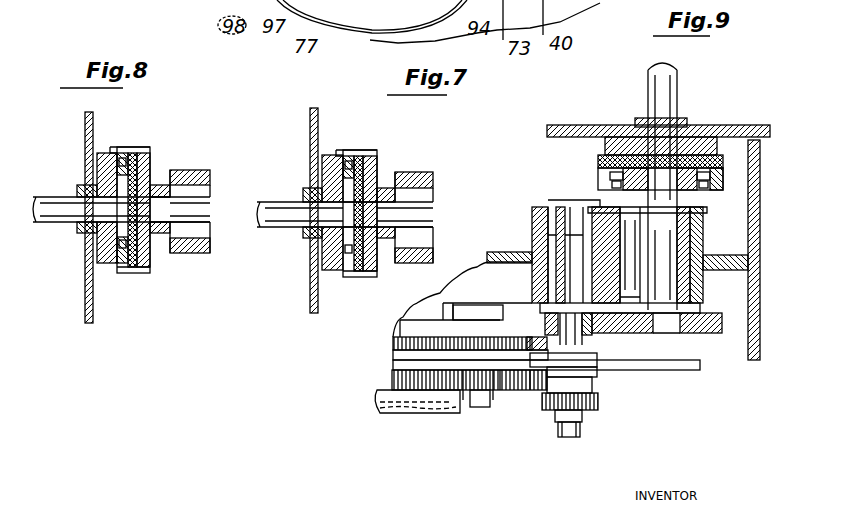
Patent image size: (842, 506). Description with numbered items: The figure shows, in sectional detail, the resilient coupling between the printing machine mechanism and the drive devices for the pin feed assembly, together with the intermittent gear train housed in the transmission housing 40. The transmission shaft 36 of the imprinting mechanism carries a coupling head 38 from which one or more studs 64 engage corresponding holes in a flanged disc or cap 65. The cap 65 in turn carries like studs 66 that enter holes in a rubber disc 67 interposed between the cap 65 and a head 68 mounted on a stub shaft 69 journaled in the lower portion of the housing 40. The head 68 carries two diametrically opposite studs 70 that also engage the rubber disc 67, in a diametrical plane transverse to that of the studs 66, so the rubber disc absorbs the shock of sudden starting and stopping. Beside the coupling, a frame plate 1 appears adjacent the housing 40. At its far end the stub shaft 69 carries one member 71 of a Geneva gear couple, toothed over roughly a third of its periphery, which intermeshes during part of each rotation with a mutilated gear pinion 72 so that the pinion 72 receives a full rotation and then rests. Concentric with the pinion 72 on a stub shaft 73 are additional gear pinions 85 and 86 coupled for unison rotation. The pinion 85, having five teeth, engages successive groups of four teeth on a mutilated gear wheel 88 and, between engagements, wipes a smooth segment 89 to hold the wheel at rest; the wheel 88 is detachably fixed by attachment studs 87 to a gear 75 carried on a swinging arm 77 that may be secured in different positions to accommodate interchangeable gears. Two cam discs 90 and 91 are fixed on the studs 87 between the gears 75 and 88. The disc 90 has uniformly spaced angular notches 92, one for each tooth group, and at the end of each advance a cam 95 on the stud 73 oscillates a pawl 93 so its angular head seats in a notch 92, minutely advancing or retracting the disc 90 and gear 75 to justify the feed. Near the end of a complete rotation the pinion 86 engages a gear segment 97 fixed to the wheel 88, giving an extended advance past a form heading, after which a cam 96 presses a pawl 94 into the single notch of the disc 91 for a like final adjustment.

In FIG. 8, the frame plate 1 is at (85, 133).
In FIG. 7, the frame plate 1 is at (310, 135).
In FIG. 9, the frame plate 1 is at (738, 125).
In FIG. 8, the transmission shaft 36 is at (45, 215).
In FIG. 7, the transmission shaft 36 is at (265, 205).
In FIG. 9, the transmission shaft 36 is at (677, 73).
In FIG. 8, the coupling head 38 is at (100, 265).
In FIG. 7, the coupling head 38 is at (330, 160).
In FIG. 9, the coupling head 38 is at (620, 133).
In FIG. 8, the transmission housing 40 is at (197, 255).
In FIG. 7, the transmission housing 40 is at (433, 178).
In FIG. 9, the transmission housing 40 is at (745, 240).
In FIG. 8, the stud 64 is at (120, 270).
In FIG. 8, the flanged disc or cap 65 is at (120, 160).
In FIG. 7, the flanged disc or cap 65 is at (340, 158).
In FIG. 9, the flanged disc or cap 65 is at (605, 150).
In FIG. 8, the stud 66 is at (135, 150).
In FIG. 7, the stud 66 is at (360, 152).
In FIG. 8, the rubber disc 67 is at (135, 275).
In FIG. 7, the rubber disc 67 is at (350, 277).
In FIG. 9, the rubber disc 67 is at (598, 175).
In FIG. 8, the head 68 is at (150, 150).
In FIG. 7, the head 68 is at (377, 152).
In FIG. 9, the head 68 is at (723, 185).
In FIG. 8, the stub shaft 69 is at (208, 220).
In FIG. 7, the stub shaft 69 is at (433, 215).
In FIG. 9, the stub shaft 69 is at (665, 335).
In FIG. 9, the stud 70 is at (723, 165).
In FIG. 9, the Geneva gear member 71 is at (705, 335).
In FIG. 9, the mutilated gear pinion 72 is at (625, 340).
In FIG. 9, the stub shaft 73 is at (560, 230).
In FIG. 9, the gear 75 is at (495, 340).
In FIG. 9, the swinging arm 77 is at (470, 305).
In FIG. 9, the mutilated gear pinion 85 is at (598, 400).
In FIG. 9, the gear pinion 86 is at (578, 432).
In FIG. 9, the attachment stud 87 is at (480, 407).
In FIG. 9, the mutilated gear wheel 88 is at (380, 388).
In FIG. 9, the smooth segment 89 is at (430, 385).
In FIG. 9, the cam disc 90 is at (395, 353).
In FIG. 9, the cam disc 91 is at (410, 395).
In FIG. 9, the angular notch 92 is at (400, 330).
In FIG. 9, the pawl 93 is at (545, 358).
In FIG. 9, the pawl 94 is at (525, 392).
In FIG. 9, the cam 95 is at (585, 336).
In FIG. 9, the cam 96 is at (592, 370).
In FIG. 9, the gear segment 97 is at (470, 400).